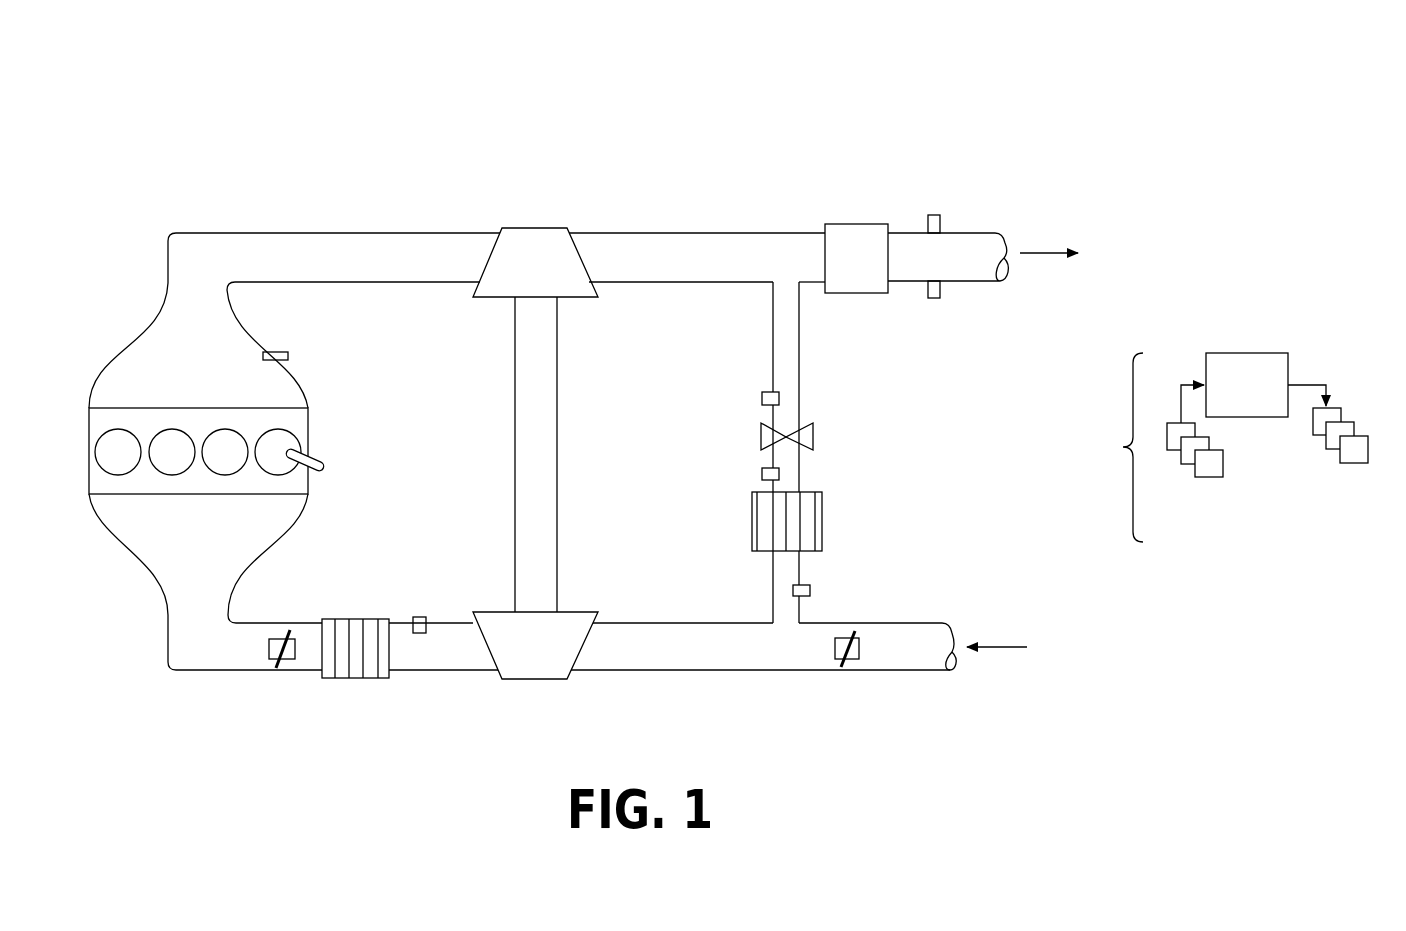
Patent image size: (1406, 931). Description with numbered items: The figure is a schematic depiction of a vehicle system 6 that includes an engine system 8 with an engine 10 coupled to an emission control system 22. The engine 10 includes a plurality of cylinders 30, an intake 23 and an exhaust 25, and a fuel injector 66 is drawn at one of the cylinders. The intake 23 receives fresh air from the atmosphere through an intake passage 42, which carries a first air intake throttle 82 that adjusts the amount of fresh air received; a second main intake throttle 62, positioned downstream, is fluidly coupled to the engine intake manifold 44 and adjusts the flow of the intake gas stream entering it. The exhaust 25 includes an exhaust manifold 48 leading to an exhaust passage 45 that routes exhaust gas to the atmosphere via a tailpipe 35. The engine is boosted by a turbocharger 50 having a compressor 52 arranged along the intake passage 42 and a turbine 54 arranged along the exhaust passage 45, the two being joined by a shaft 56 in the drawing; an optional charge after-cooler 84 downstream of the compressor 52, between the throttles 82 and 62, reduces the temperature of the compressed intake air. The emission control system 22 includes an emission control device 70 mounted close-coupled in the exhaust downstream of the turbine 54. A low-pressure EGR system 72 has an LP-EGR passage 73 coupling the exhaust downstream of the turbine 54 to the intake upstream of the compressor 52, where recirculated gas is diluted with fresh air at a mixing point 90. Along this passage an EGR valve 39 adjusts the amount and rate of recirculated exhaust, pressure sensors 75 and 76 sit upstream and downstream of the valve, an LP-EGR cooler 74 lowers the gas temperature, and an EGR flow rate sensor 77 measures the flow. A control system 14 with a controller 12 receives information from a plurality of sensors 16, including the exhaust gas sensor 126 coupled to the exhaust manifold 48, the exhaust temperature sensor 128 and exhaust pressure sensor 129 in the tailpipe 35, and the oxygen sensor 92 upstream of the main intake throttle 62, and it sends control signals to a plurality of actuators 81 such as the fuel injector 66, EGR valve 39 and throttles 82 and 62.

The vehicle system 6 is at (1200, 143).
The engine system 8 is at (128, 228).
The engine 10 is at (183, 408).
The cylinders 30 is at (112, 431).
The fuel injector 66 is at (317, 455).
The exhaust manifold 48 is at (187, 361).
The engine intake manifold 44 is at (187, 549).
The exhaust 25 is at (232, 193).
The exhaust passage 45 is at (262, 233).
The exhaust gas sensor 126 is at (264, 352).
The second main intake throttle 62 is at (269, 653).
The intake 23 is at (208, 722).
The charge after-cooler 84 is at (344, 619).
The oxygen sensor 92 is at (419, 617).
The mixing point 90 is at (787, 650).
The intake passage 42 is at (908, 623).
The first air intake throttle 82 is at (859, 647).
The turbocharger 50 is at (573, 429).
The turbine 54 is at (540, 228).
The shaft 56 is at (558, 490).
The compressor 52 is at (535, 679).
The emission control system 22 is at (878, 202).
The emission control device 70 is at (845, 269).
The tailpipe 35 is at (990, 233).
The exhaust pressure sensor 129 is at (934, 215).
The exhaust temperature sensor 128 is at (934, 298).
The low-pressure EGR system 72 is at (870, 424).
The LP-EGR passage 73 is at (772, 333).
The pressure sensor 75 is at (762, 397).
The EGR valve 39 is at (815, 435).
The pressure sensor 76 is at (762, 471).
The LP-EGR cooler 74 is at (822, 520).
The EGR flow rate sensor 77 is at (810, 589).
The control system 14 is at (1215, 447).
The controller 12 is at (1247, 385).
The sensors 16 is at (1155, 487).
The actuators 81 is at (1378, 467).